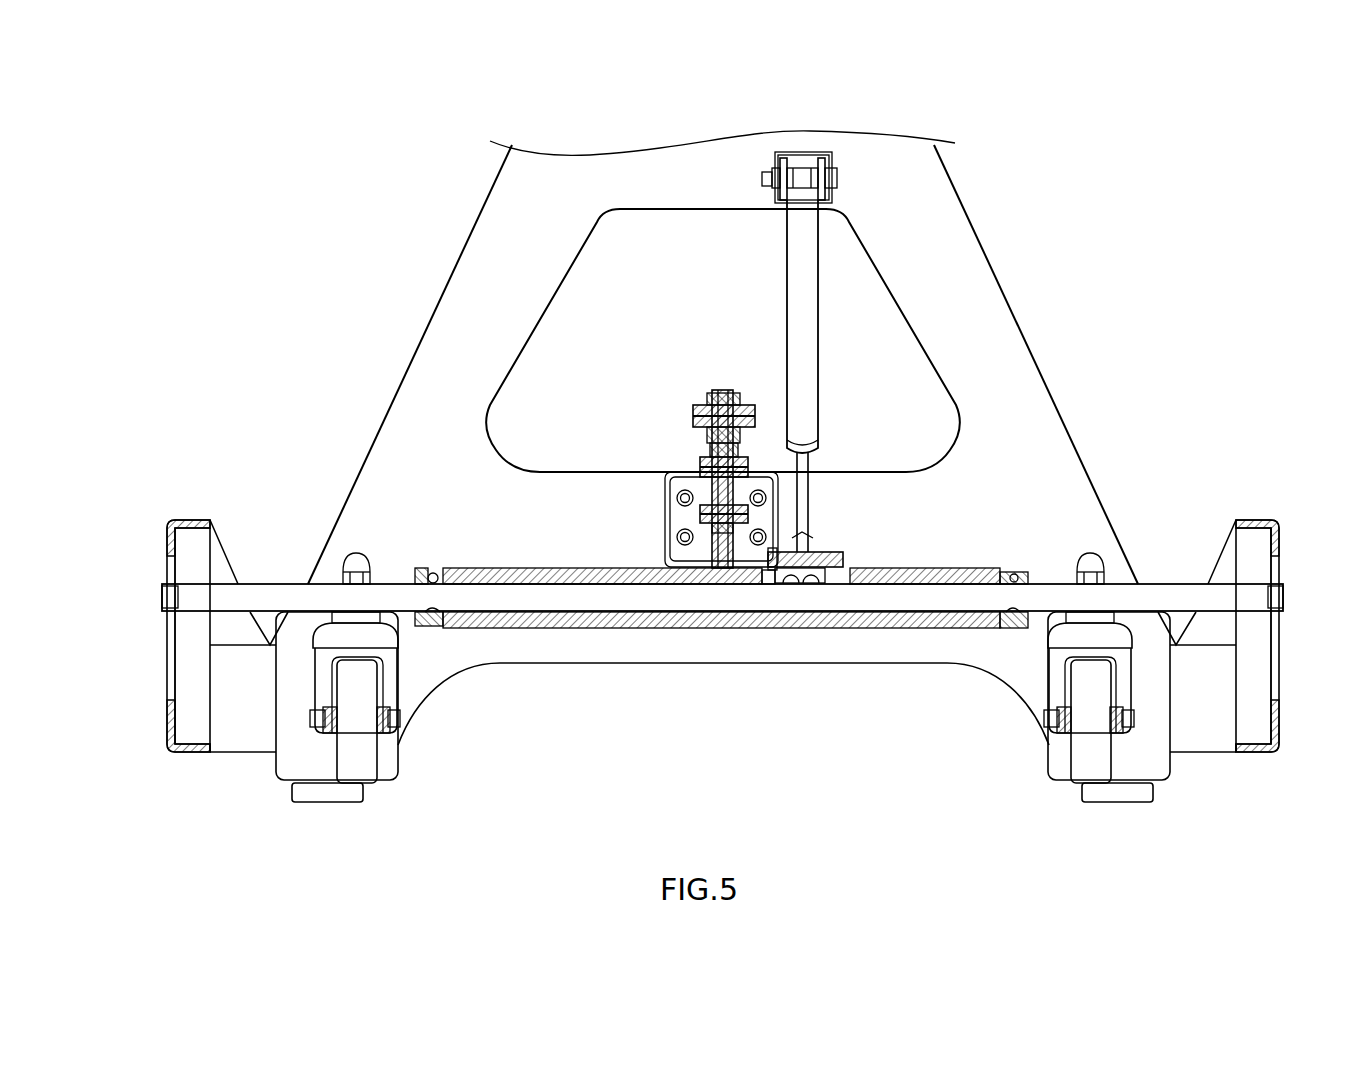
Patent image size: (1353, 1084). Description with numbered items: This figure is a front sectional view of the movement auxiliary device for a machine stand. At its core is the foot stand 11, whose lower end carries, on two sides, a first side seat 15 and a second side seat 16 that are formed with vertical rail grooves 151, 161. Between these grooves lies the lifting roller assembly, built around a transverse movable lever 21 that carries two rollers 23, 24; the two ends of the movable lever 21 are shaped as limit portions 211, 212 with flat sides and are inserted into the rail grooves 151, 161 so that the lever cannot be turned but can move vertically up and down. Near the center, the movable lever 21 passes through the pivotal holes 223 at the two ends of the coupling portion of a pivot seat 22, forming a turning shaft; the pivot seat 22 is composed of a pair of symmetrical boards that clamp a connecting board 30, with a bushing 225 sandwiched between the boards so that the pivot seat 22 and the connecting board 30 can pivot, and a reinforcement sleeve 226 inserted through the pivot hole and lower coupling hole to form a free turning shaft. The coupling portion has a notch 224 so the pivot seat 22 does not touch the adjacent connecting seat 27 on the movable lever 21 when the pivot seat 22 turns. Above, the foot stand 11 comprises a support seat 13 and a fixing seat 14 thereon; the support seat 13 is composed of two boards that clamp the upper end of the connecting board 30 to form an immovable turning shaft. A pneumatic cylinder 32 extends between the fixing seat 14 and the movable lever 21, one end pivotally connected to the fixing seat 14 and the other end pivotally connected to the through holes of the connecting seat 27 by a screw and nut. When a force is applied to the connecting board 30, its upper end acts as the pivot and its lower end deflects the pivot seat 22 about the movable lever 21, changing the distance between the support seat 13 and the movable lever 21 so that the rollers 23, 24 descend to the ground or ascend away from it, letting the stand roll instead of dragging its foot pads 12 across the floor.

The foot stand 11 is at (470, 290).
The foot pads 12 is at (320, 792).
The support seat 13 is at (724, 395).
The fixing seat 14 is at (835, 178).
The first side seat 15 is at (195, 752).
The rail groove 151 is at (178, 668).
The second side seat 16 is at (1245, 752).
The rail groove 161 is at (1268, 665).
The movable lever 21 is at (620, 611).
The limit portion 211 is at (170, 597).
The limit portion 212 is at (1276, 597).
The pivot seat 22 is at (680, 535).
The pivotal holes 223 is at (493, 628).
The notch 224 is at (764, 586).
The bushing 225 is at (720, 510).
The reinforcement sleeve 226 is at (727, 400).
The roller 23 is at (360, 735).
The roller 24 is at (1095, 737).
The connecting seat 27 is at (805, 612).
The connecting board 30 is at (712, 440).
The pneumatic cylinder 32 is at (815, 305).